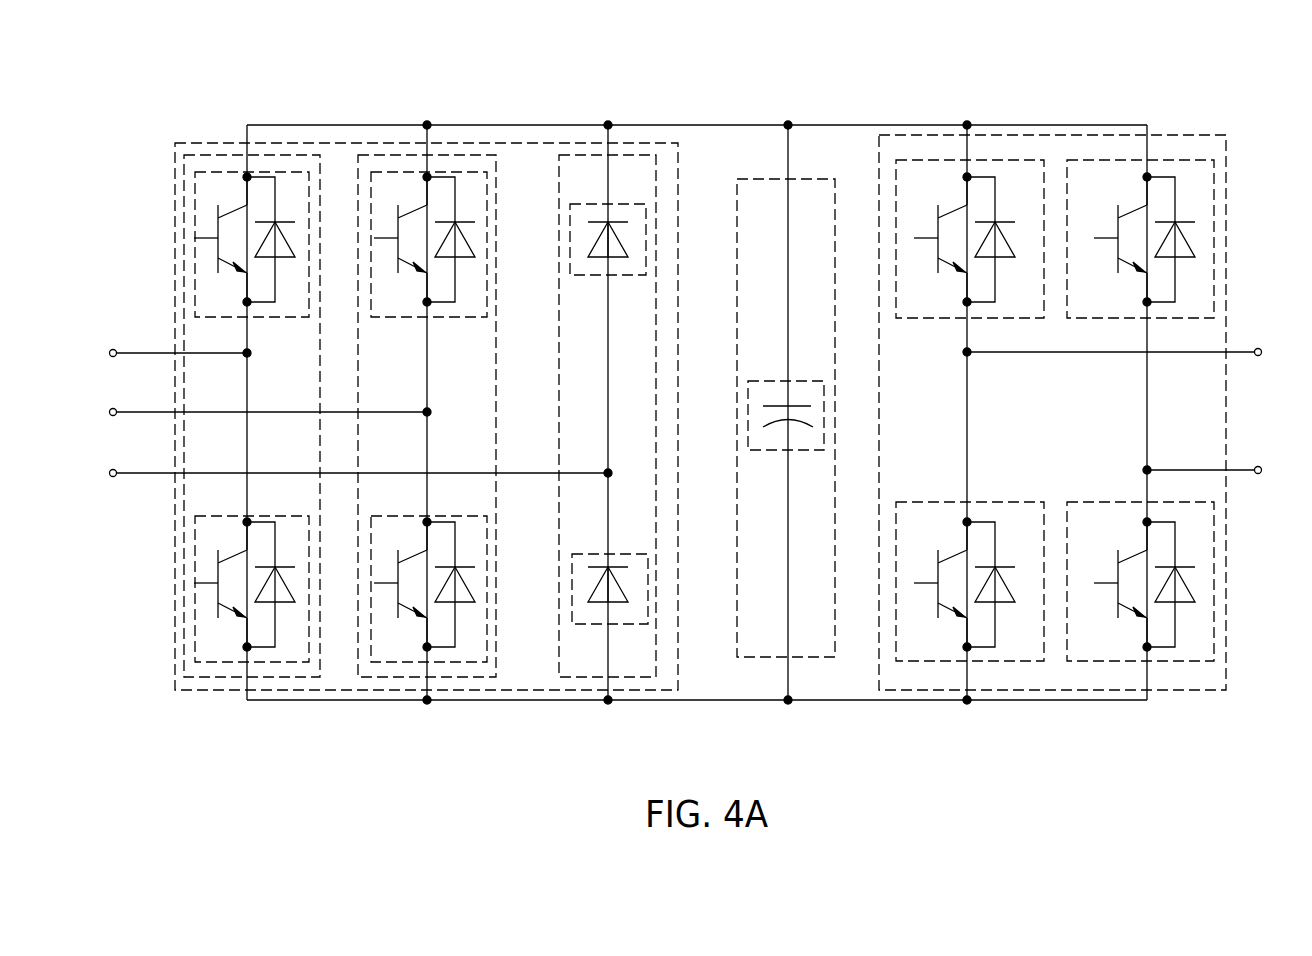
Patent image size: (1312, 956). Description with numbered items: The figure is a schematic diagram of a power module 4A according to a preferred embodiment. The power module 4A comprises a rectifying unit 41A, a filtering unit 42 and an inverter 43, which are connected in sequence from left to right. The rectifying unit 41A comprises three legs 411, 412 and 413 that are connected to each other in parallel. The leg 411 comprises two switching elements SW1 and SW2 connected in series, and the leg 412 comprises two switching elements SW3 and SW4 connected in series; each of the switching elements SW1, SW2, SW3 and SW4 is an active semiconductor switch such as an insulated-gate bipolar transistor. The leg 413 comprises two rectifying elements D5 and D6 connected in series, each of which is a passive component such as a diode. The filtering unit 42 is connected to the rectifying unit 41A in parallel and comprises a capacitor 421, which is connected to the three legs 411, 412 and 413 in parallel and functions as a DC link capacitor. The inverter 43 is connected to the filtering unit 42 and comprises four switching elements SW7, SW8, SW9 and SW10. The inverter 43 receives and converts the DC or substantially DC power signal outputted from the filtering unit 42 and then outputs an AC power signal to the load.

The power module 4A is at (146, 96).
The rectifying unit 41A is at (173, 267).
The leg 411 is at (285, 155).
The leg 412 is at (466, 155).
The leg 413 is at (634, 155).
The filtering unit 42 is at (786, 371).
The capacitor 421 is at (812, 381).
The inverter 43 is at (1205, 135).
The switching element SW1 is at (240, 172).
The switching element SW2 is at (270, 665).
The switching element SW3 is at (418, 172).
The switching element SW4 is at (450, 665).
The switching element SW7 is at (1003, 160).
The switching element SW8 is at (935, 663).
The switching element SW9 is at (1181, 160).
The switching element SW10 is at (1115, 663).
The rectifying element D5 is at (620, 276).
The rectifying element D6 is at (637, 554).